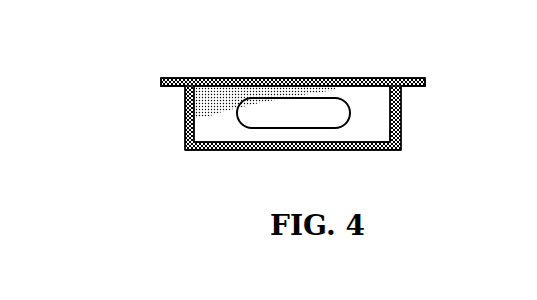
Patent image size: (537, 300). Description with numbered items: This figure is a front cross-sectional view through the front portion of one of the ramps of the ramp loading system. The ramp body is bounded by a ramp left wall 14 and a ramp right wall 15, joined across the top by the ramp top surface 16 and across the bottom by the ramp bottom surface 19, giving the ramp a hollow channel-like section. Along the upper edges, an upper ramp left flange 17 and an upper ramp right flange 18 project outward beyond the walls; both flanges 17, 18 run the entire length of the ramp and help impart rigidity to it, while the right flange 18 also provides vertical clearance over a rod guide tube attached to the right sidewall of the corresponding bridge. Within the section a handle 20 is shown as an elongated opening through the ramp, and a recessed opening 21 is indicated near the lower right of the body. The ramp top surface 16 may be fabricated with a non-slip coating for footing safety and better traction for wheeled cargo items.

The ramp left wall 14 is at (184, 118).
The ramp right wall 15 is at (402, 128).
The ramp top surface 16 is at (312, 78).
The ramp left flange 17 is at (163, 87).
The ramp right flange 18 is at (417, 88).
The ramp bottom surface 19 is at (258, 150).
The handle 20 is at (308, 115).
The recessed opening 21 is at (380, 133).